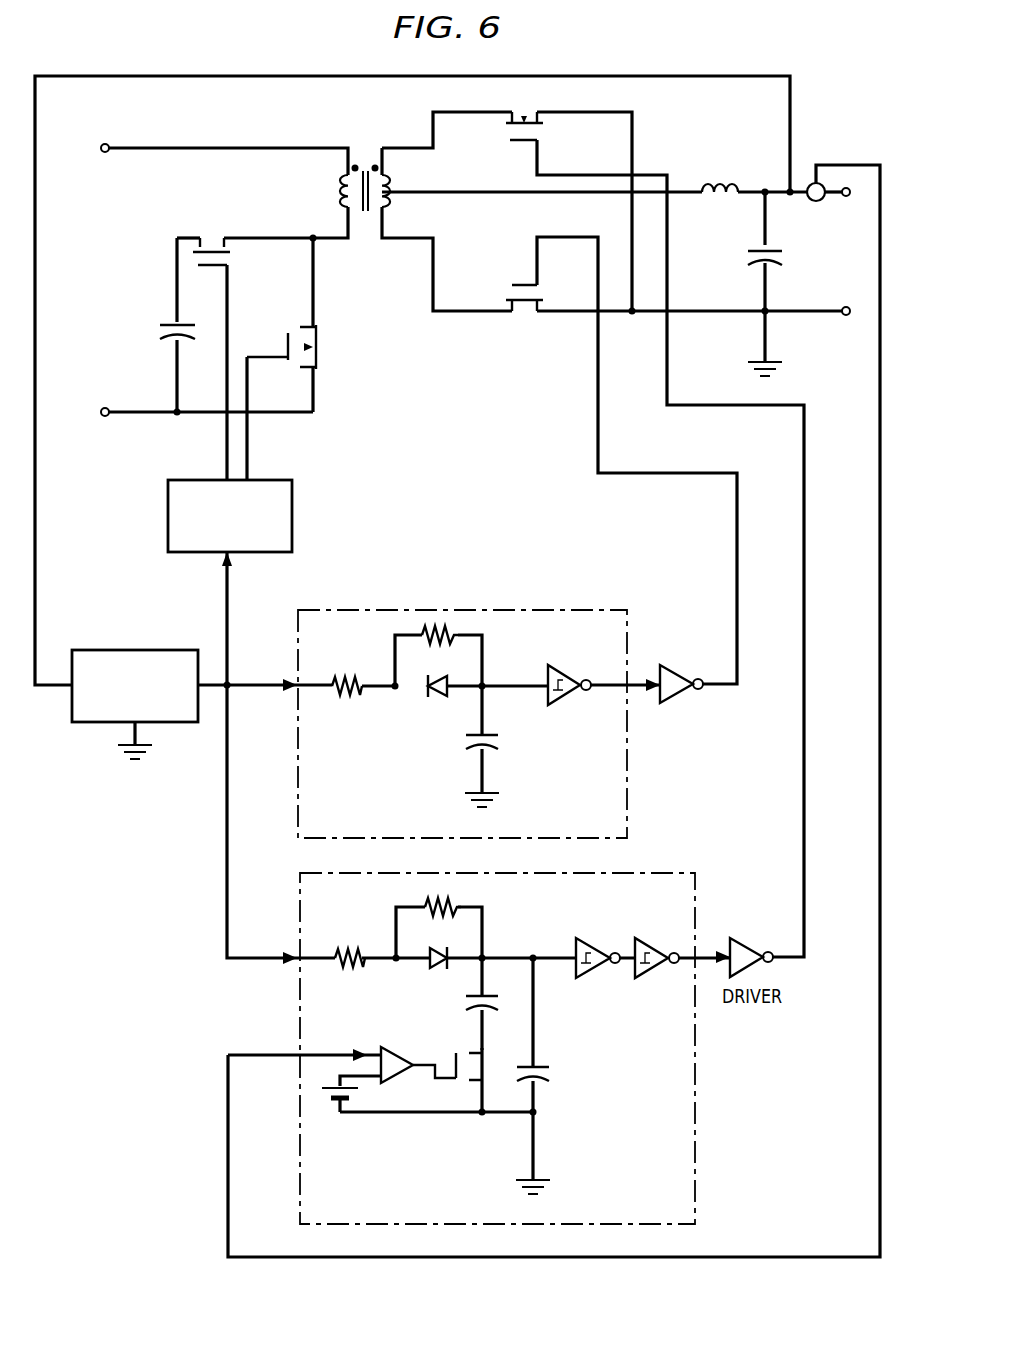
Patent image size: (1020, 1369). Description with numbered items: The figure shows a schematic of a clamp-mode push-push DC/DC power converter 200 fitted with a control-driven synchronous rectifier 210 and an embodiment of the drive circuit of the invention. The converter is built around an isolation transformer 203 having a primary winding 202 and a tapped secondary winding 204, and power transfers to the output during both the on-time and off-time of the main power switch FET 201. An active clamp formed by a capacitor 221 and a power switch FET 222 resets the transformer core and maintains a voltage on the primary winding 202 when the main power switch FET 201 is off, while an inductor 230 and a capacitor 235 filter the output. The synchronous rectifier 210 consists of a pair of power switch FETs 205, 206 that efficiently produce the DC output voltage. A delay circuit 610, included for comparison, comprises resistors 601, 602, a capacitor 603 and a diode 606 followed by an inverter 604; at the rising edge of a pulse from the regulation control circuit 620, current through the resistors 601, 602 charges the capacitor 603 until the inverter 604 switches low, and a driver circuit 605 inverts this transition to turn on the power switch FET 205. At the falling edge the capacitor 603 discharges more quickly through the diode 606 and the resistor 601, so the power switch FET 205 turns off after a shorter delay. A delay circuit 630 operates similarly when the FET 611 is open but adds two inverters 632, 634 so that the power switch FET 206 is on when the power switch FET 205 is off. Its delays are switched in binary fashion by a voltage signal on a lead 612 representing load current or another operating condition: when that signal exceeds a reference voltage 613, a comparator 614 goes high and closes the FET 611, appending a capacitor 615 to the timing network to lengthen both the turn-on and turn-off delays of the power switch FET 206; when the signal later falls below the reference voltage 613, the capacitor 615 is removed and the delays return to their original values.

The clamp-mode push-push DC/DC power converter 200 is at (260, 57).
The main power switch FET 201 is at (288, 335).
The primary winding 202 is at (330, 198).
The isolation transformer 203 is at (368, 162).
The tapped secondary winding 204 is at (400, 199).
The power switch FET 205 is at (527, 315).
The power switch FET 206 is at (513, 132).
The control-driven synchronous rectifier 210 is at (600, 155).
The capacitor 221 is at (165, 333).
The power switch FET 222 is at (210, 247).
The inductor 230 is at (718, 178).
The capacitor 235 is at (745, 258).
The resistor 601 is at (348, 676).
The resistor 602 is at (438, 628).
The capacitor 603 is at (465, 742).
The inverter 604 is at (562, 680).
The driver circuit 605 is at (690, 675).
The diode 606 is at (438, 700).
The delay circuit 610 is at (298, 818).
The FET 611 is at (485, 1058).
The lead 612 is at (268, 1052).
The reference voltage 613 is at (325, 1088).
The comparator 614 is at (398, 1082).
The capacitor 615 is at (465, 1005).
The regulation control circuit 620 is at (138, 650).
The delay circuit 630 is at (300, 1207).
The inverter 632 is at (598, 950).
The inverter 634 is at (661, 950).